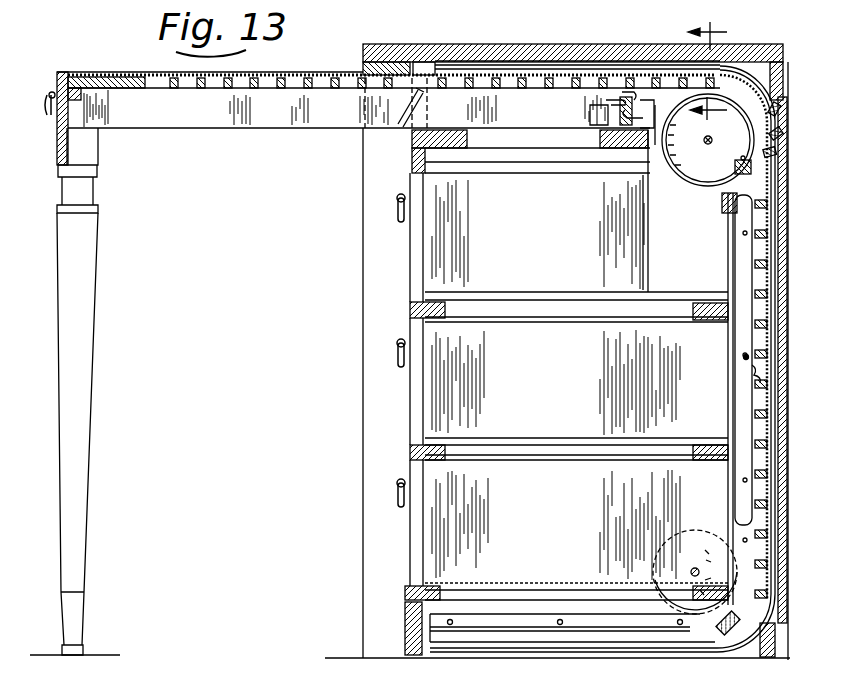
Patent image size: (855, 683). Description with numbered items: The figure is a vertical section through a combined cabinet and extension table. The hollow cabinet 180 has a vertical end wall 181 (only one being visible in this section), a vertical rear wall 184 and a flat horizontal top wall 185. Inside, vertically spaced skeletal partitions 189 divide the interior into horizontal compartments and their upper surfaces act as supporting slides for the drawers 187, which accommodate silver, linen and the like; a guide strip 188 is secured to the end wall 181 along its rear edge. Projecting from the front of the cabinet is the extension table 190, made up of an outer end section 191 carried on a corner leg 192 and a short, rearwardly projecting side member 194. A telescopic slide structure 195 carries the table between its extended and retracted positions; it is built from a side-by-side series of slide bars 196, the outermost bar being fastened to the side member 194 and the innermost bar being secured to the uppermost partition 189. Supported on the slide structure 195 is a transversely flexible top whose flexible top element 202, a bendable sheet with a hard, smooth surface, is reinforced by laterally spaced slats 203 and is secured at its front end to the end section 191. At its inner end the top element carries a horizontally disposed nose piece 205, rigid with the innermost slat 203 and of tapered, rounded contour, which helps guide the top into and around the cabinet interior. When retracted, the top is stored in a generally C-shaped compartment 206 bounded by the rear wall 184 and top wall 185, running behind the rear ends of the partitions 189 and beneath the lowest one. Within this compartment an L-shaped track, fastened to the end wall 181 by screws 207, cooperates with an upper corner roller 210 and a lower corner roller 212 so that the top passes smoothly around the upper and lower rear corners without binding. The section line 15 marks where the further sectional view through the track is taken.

The section line 15- 15 is at (720, 77).
The cabinet 180 is at (392, 40).
The end wall 181 is at (362, 208).
The rear wall 184 is at (780, 318).
The top wall 185 is at (520, 52).
The drawer 187 is at (410, 240).
The guide strip 188 is at (745, 326).
The skeletal partition 189 is at (446, 150).
The extension table 190 is at (137, 69).
The outer end section 191 is at (55, 151).
The corner leg 192 is at (92, 270).
The side member 194 is at (200, 120).
The telescopic slide structure 195 is at (625, 119).
The slide bar 196 is at (637, 130).
The flexible top element 202 is at (306, 136).
The slat 203 is at (243, 92).
The nose piece 205 is at (742, 630).
The C-shaped compartment 206 is at (741, 358).
The screw 207 is at (451, 618).
The upper corner roller 210 is at (694, 172).
The lower corner roller 212 is at (740, 566).